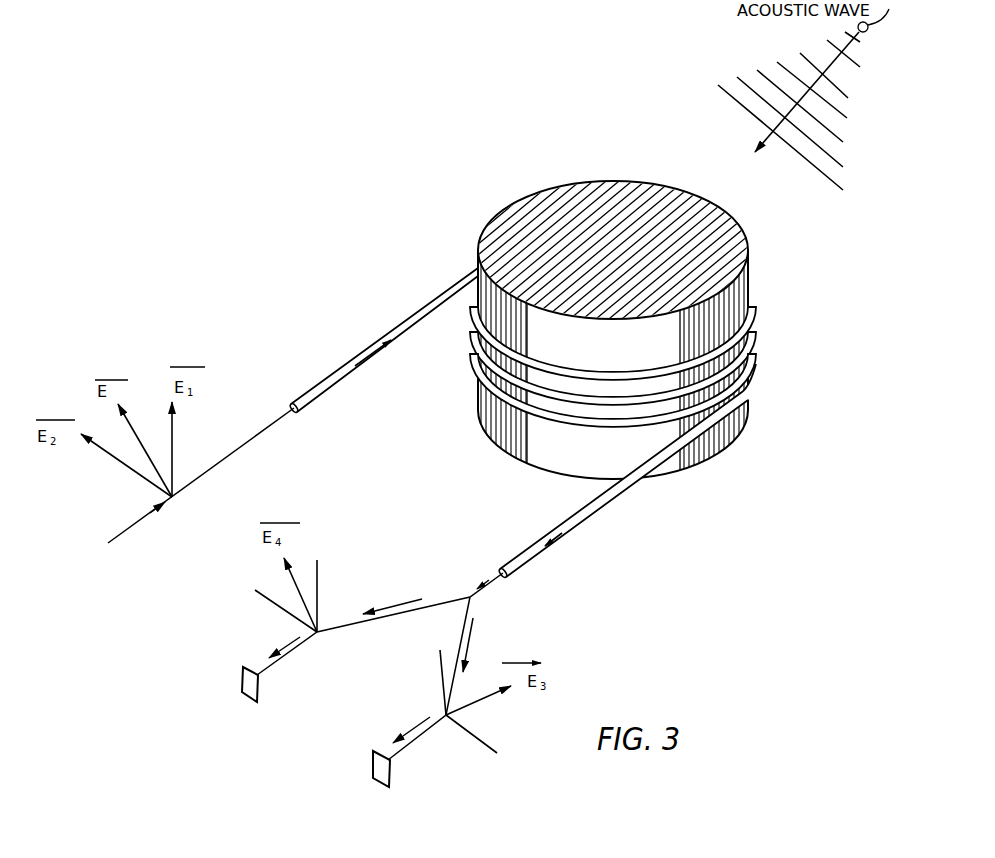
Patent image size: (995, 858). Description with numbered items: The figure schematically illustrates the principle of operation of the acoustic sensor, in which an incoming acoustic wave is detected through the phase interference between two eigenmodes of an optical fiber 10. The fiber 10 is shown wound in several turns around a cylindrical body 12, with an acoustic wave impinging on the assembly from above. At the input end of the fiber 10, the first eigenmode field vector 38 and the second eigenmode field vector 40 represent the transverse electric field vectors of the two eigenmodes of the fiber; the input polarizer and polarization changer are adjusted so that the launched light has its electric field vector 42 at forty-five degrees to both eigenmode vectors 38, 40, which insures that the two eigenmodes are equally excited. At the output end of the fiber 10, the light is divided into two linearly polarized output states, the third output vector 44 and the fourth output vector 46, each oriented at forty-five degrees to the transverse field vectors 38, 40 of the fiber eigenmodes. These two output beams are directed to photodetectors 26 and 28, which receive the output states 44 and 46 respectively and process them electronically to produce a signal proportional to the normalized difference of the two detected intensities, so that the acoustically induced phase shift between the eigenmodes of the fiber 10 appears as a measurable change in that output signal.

The optical fiber 10 is at (318, 383).
The cylindrical mandrel 12 is at (601, 456).
The photodetector 26 is at (245, 684).
The photodetector 28 is at (376, 771).
The transverse electric field vector E1 38 is at (173, 450).
The transverse electric field vector E2 40 is at (119, 461).
The electric field vector E 42 is at (134, 431).
The linearly polarized output state E3 44 is at (475, 702).
The linearly polarized output state E4 46 is at (292, 579).